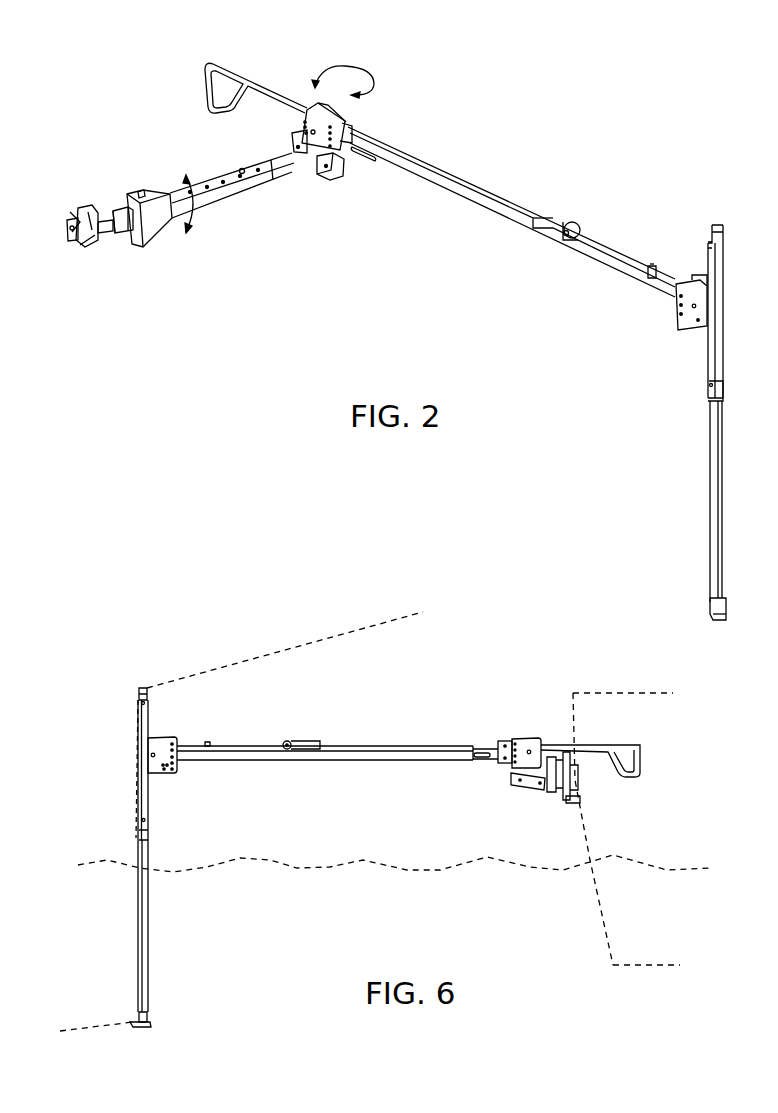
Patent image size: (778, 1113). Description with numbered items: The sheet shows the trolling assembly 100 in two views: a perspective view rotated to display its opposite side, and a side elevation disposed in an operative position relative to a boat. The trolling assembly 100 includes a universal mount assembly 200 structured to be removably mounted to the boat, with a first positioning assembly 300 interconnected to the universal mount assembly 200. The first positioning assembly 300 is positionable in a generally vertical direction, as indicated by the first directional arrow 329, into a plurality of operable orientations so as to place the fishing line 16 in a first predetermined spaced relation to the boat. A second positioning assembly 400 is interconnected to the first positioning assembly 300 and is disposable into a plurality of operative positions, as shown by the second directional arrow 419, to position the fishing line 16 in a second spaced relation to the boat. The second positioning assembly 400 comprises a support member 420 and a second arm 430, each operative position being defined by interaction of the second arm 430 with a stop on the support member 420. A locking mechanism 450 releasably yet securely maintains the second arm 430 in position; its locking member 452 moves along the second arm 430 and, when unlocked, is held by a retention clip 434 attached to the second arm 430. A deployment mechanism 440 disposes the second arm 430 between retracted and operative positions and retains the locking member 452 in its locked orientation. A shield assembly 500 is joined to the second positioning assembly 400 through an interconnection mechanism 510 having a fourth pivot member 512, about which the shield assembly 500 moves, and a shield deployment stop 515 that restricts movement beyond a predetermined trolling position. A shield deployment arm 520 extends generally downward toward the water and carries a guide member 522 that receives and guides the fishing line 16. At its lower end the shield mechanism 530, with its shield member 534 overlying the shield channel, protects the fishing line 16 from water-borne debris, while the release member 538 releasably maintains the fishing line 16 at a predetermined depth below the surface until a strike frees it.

In FIG. 2, the trolling assembly 100 is at (452, 242).
In FIG. 6, the trolling assembly 100 is at (468, 633).
In FIG. 6, the fishing line 16 is at (300, 646).
In FIG. 2, the universal mount assembly 200 is at (92, 260).
In FIG. 2, the first positioning assembly 300 is at (267, 197).
In FIG. 2, the first directional arrow 329 is at (198, 220).
In FIG. 2, the second positioning assembly 400 is at (503, 186).
In FIG. 6, the second positioning assembly 400 is at (327, 763).
In FIG. 2, the second directional arrow 419 is at (372, 86).
In FIG. 6, the support member 420 is at (523, 740).
In FIG. 6, the second arm 430 is at (418, 760).
In FIG. 6, the retention clip 434 is at (485, 760).
In FIG. 6, the deployment mechanism 440 is at (345, 744).
In FIG. 6, the locking mechanism 450 is at (502, 773).
In FIG. 6, the locking member 452 is at (505, 742).
In FIG. 2, the shield assembly 500 is at (706, 462).
In FIG. 6, the shield assembly 500 is at (139, 846).
In FIG. 6, the interconnection mechanism 510 is at (158, 737).
In FIG. 6, the fourth pivot member 512 is at (153, 753).
In FIG. 6, the shield deployment stop 515 is at (180, 745).
In FIG. 6, the shield deployment arm 520 is at (143, 797).
In FIG. 6, the guide member 522 is at (145, 687).
In FIG. 6, the shield mechanism 530 is at (158, 913).
In FIG. 6, the shield member 534 is at (137, 965).
In FIG. 6, the release member 538 is at (148, 1023).